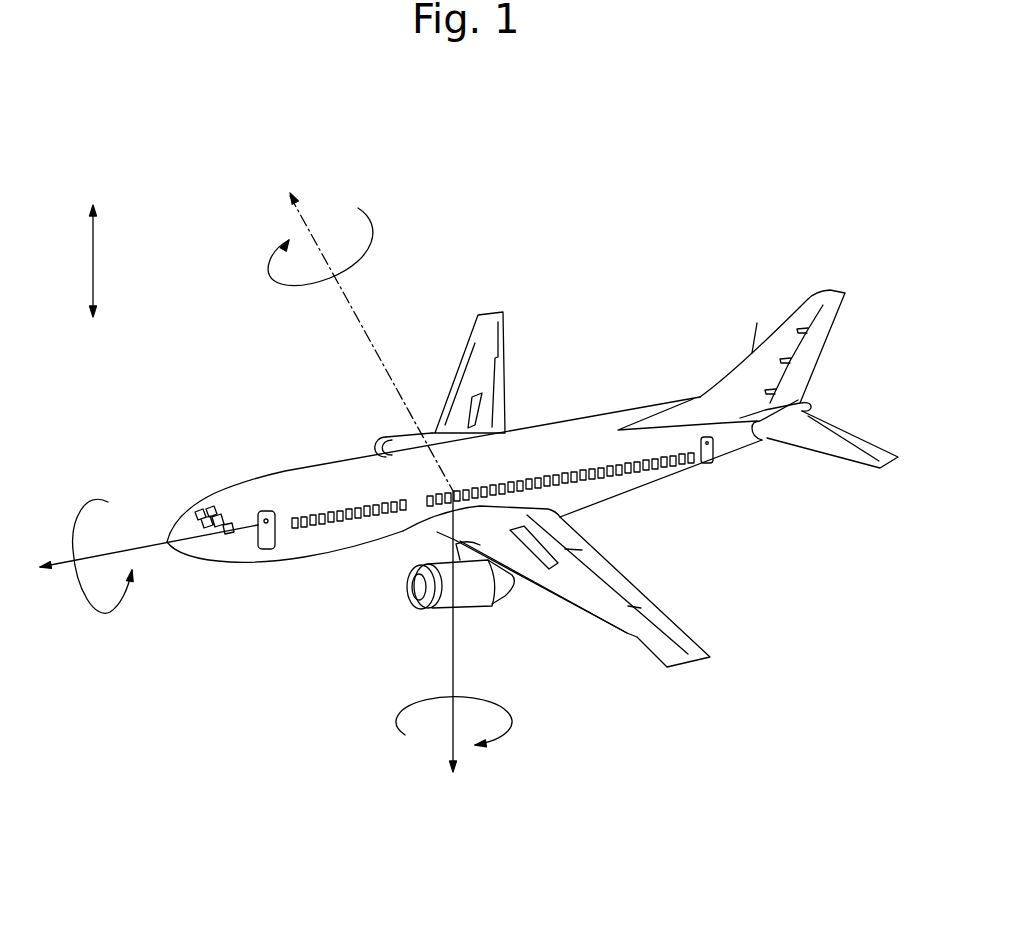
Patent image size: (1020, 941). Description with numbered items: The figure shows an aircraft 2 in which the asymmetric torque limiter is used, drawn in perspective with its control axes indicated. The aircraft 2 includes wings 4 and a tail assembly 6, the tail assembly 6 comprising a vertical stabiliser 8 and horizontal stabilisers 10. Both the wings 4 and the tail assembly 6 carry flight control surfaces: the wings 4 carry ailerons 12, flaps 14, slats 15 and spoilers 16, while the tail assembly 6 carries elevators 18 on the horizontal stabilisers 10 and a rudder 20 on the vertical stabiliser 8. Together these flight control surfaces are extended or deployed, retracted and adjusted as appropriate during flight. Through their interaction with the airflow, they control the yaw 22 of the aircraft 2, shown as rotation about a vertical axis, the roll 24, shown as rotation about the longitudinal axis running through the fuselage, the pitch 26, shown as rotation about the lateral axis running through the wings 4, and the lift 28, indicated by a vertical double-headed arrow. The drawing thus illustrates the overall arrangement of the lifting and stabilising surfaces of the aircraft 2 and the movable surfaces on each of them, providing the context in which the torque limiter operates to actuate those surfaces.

The aircraft 2 is at (652, 160).
The wings 4 is at (598, 605).
The tail assembly 6 is at (798, 305).
The vertical stabiliser 8 is at (722, 392).
The horizontal stabilisers 10 is at (778, 324).
The ailerons 12 is at (503, 333).
The flaps 14 is at (507, 367).
The slats 15 is at (455, 388).
The spoilers 16 is at (477, 407).
The elevators 18 is at (853, 437).
The rudder 20 is at (823, 322).
The yaw 22 is at (397, 718).
The roll 24 is at (80, 500).
The pitch 26 is at (270, 266).
The lift 28 is at (97, 238).